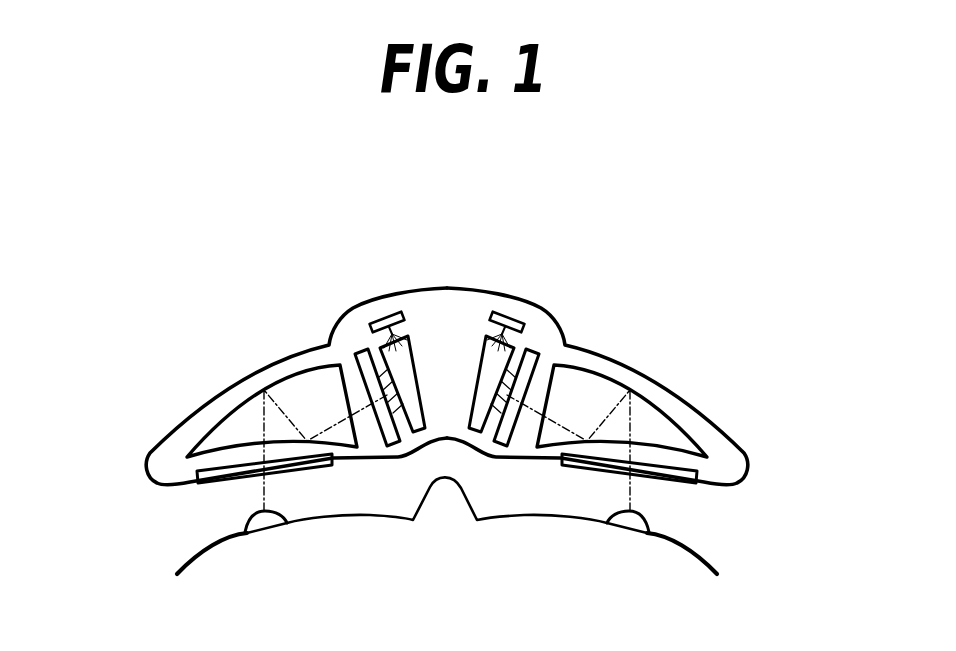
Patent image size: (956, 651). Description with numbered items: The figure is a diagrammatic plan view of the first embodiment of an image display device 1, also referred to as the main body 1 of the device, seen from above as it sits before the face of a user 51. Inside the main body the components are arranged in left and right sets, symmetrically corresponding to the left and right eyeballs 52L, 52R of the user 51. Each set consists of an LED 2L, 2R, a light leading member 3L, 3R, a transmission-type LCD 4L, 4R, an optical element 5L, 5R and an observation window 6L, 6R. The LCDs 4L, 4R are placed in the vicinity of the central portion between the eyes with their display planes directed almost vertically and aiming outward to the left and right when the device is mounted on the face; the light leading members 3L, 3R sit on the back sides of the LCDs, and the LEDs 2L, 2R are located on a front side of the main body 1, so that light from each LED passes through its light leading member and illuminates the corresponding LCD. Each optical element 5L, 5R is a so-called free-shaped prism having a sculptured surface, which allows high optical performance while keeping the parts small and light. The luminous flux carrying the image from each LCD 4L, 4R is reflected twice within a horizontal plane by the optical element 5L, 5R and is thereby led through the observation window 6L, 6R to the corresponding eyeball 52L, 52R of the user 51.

The image display device 1 is at (124, 416).
The left LED 2L is at (383, 313).
The right LED 2R is at (511, 314).
The left light leading member 3L is at (380, 355).
The right light leading member 3R is at (511, 349).
The left LCD 4L is at (353, 360).
The right LCD 4R is at (541, 358).
The left optical element 5L is at (243, 410).
The right optical element 5R is at (682, 446).
The left observation window 6L is at (200, 478).
The right observation window 6R is at (674, 484).
The user 51 is at (207, 562).
The left eyeball 52L is at (245, 530).
The right eyeball 52R is at (634, 528).